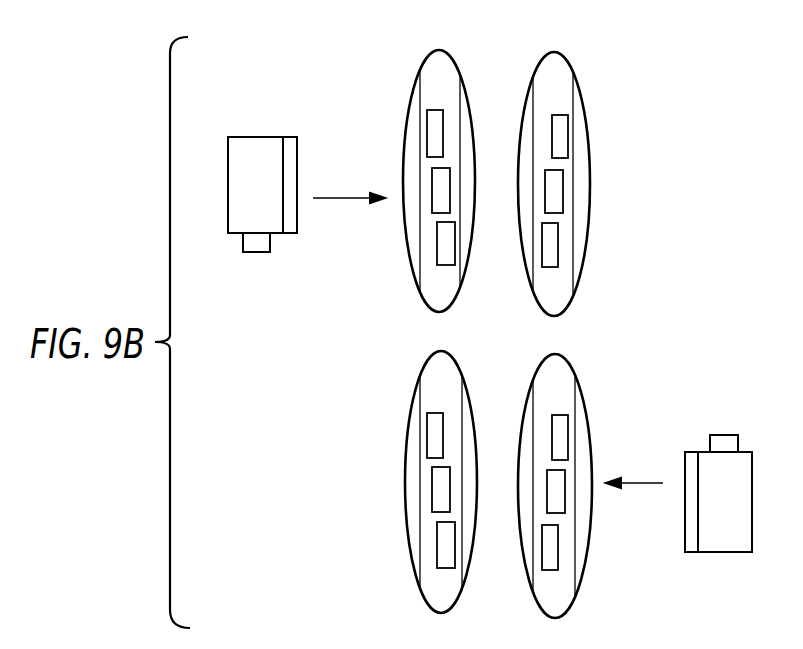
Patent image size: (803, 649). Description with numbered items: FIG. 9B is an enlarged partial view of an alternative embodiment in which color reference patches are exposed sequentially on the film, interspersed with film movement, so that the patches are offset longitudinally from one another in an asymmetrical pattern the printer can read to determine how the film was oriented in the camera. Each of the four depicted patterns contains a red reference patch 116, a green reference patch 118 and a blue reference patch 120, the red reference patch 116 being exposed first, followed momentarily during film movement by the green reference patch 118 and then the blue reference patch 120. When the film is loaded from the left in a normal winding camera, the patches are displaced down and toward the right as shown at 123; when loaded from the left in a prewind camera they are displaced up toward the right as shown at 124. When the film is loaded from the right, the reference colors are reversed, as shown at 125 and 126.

The red reference patch 116 is at (443, 118).
The green reference patch 118 is at (445, 173).
The blue reference patch 120 is at (456, 252).
The reference patches displaced down and toward the right 123 is at (423, 58).
The reference patches displaced up toward the right 124 is at (560, 55).
The reversed reference pattern for right-loaded normal winding camera 125 is at (427, 358).
The reversed reference pattern for right-loaded prewind camera 126 is at (567, 363).